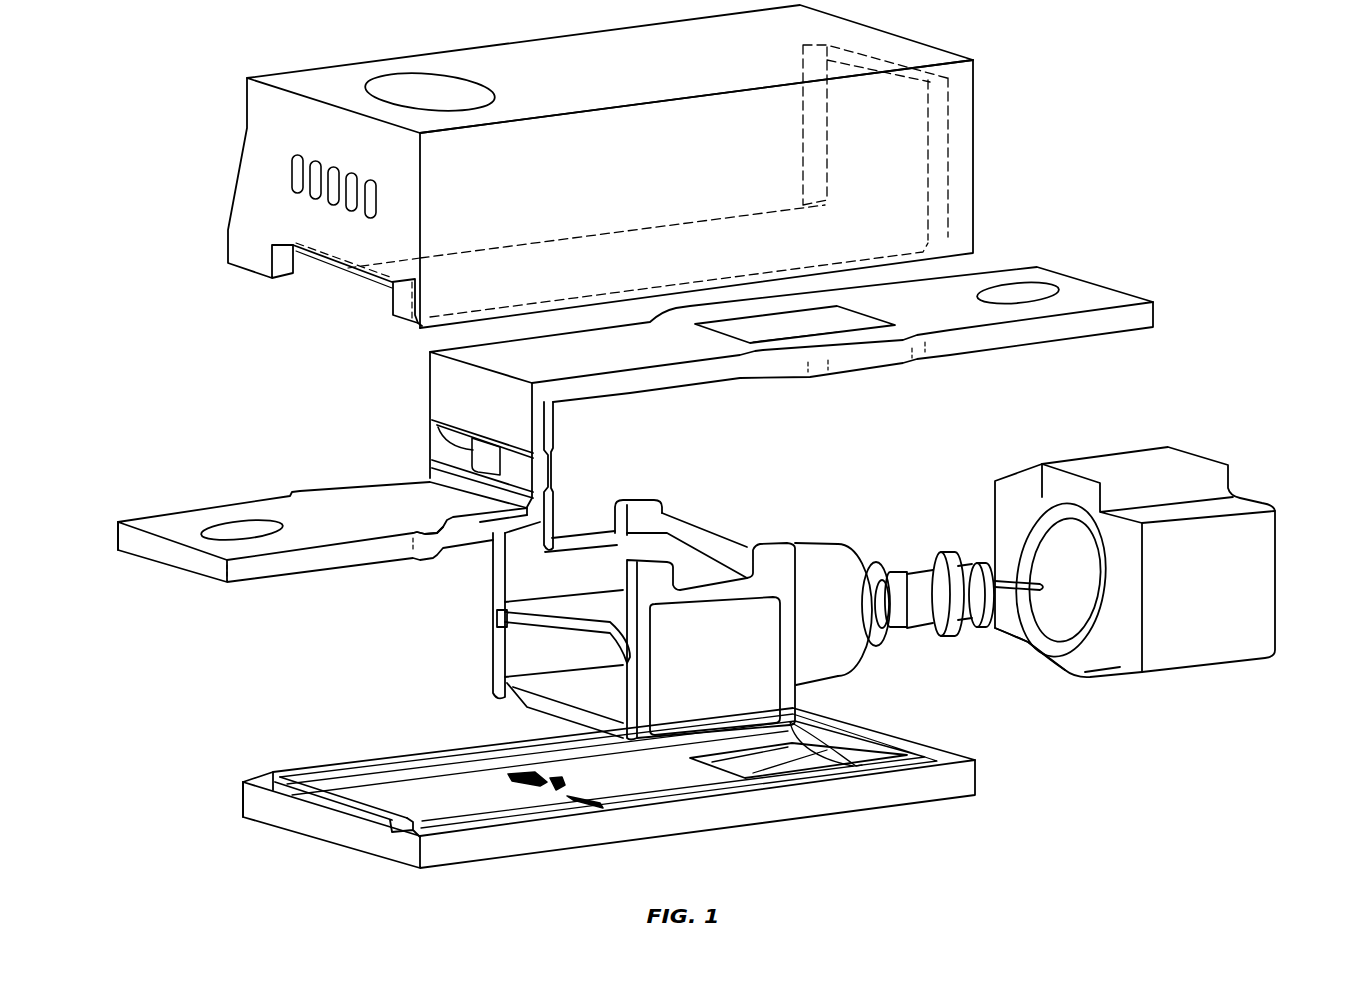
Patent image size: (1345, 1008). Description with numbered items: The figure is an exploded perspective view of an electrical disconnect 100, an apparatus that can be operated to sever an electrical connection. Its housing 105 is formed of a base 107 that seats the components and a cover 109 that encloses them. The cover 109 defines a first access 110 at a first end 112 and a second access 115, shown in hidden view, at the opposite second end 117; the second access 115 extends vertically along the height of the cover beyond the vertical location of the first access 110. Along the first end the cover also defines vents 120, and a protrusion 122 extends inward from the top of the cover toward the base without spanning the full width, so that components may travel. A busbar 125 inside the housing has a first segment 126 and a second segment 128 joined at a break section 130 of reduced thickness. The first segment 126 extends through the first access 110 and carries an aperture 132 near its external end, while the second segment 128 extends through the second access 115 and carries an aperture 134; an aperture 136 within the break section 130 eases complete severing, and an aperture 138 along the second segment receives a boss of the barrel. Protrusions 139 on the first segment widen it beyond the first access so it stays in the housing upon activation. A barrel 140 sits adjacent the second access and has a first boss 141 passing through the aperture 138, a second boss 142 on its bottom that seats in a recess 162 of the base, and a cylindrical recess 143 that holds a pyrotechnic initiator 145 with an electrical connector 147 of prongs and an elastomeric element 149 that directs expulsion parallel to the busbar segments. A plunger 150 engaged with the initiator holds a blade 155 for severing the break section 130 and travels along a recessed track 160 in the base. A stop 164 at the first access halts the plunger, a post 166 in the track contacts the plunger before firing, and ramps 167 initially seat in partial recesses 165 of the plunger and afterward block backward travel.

The electrical disconnect 100 is at (117, 93).
The housing 105 is at (228, 224).
The base 107 is at (240, 797).
The cover 109 is at (975, 218).
The first access 110 is at (330, 270).
The first end 112 is at (247, 128).
The second access 115 is at (930, 70).
The second end 117 is at (975, 108).
The vents 120 is at (290, 172).
The protrusion 122 is at (367, 87).
The busbar 125 is at (368, 488).
The first segment 126 is at (153, 515).
The second segment 128 is at (1153, 327).
The break section 130 is at (550, 470).
The aperture 132 is at (208, 523).
The aperture 134 is at (1052, 290).
The aperture 136 is at (432, 423).
The aperture 138 is at (764, 347).
The protrusions 139 is at (413, 557).
The barrel 140 is at (1265, 660).
The first boss 141 is at (1215, 462).
The second boss 142 is at (1080, 678).
The recess 143 is at (1045, 495).
The pyrotechnic initiator 145 is at (941, 556).
The electrical connector 147 is at (996, 625).
The elastomeric element 149 is at (868, 566).
The plunger 150 is at (641, 500).
The blade 155 is at (500, 616).
The recessed track 160 is at (370, 768).
The recess 162 is at (864, 762).
The stop 164 is at (336, 818).
The partial recesses 165 is at (505, 688).
The post 166 is at (517, 775).
The ramps 167 is at (586, 809).